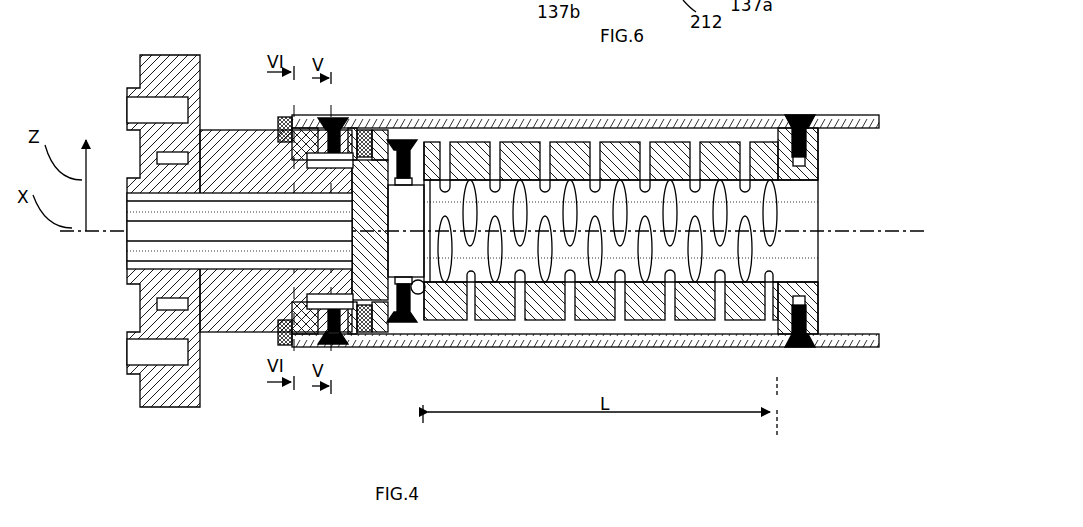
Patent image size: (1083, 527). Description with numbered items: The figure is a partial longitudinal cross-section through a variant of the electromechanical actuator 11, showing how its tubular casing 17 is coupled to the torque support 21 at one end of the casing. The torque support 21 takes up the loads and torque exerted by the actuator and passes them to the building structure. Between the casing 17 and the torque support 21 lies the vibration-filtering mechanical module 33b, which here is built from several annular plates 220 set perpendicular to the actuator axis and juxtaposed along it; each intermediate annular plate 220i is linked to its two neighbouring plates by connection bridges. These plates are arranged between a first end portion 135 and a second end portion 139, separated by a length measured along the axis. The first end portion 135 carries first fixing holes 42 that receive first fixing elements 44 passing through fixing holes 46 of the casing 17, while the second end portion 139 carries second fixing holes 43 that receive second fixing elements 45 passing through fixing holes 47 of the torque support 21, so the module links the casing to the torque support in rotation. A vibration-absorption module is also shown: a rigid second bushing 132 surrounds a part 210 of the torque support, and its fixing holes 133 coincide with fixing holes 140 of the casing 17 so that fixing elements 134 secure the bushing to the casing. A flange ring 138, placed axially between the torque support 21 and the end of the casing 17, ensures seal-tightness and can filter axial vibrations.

The torque support 21 is at (168, 58).
The part of the torque support 210 is at (330, 280).
The flange ring 138 is at (280, 117).
The fixing hole 133 is at (325, 128).
The second bushing 132 is at (358, 125).
The second end portion 139 is at (419, 134).
The annular plate 220 is at (427, 153).
The intermediate annular plate 220i is at (618, 153).
The vibration-filtering mechanical module 33b is at (621, 200).
The first end portion 135 is at (806, 110).
The casing 17 is at (848, 118).
The electromechanical actuator 11 is at (615, 210).
The first fixing hole 42 is at (803, 300).
The first fixing element 44 is at (793, 340).
The fixing hole of the casing 46 is at (773, 338).
The fixing hole of the torque support 47 is at (422, 292).
The second fixing hole 43 is at (420, 322).
The second fixing element 45 is at (405, 327).
The fixing hole of the casing 140 is at (350, 337).
The fixing element 134 is at (332, 345).